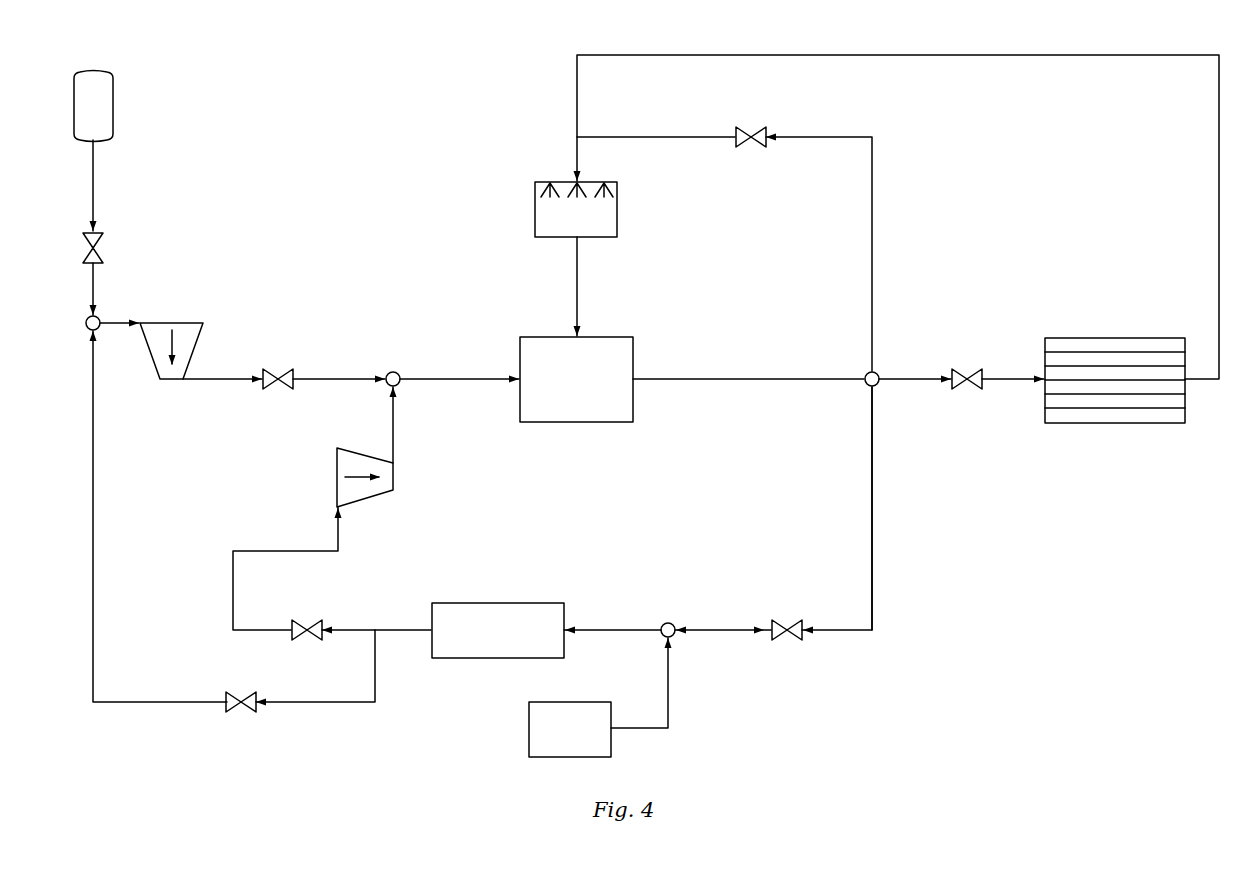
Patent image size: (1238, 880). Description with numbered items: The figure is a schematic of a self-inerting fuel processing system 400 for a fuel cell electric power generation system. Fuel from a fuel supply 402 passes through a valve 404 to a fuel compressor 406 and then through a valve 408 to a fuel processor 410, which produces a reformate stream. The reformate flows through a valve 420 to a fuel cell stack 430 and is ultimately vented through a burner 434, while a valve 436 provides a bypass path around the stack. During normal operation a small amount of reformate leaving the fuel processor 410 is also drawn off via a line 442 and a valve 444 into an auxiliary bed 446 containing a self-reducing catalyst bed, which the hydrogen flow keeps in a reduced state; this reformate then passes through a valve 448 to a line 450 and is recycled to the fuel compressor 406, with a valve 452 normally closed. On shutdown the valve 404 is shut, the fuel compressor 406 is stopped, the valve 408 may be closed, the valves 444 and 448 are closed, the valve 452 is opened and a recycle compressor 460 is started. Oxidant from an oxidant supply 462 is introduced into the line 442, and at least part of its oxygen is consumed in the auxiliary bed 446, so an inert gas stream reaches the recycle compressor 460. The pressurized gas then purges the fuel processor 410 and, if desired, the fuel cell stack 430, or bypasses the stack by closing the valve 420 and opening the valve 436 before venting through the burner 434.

The fuel processing system 400 is at (376, 226).
The fuel supply 402 is at (103, 72).
The valve 404 is at (104, 251).
The fuel compressor 406 is at (190, 323).
The valve 408 is at (280, 377).
The fuel processor 410 is at (576, 379).
The valve 420 is at (967, 377).
The fuel cell stack 430 is at (1098, 338).
The burner 434 is at (576, 209).
The valve 436 is at (751, 135).
The line 442 is at (872, 508).
The valve 444 is at (787, 628).
The auxiliary bed 446 is at (498, 630).
The valve 448 is at (242, 700).
The line 450 is at (93, 515).
The valve 452 is at (310, 628).
The recycle compressor 460 is at (393, 480).
The oxidant supply 462 is at (570, 729).